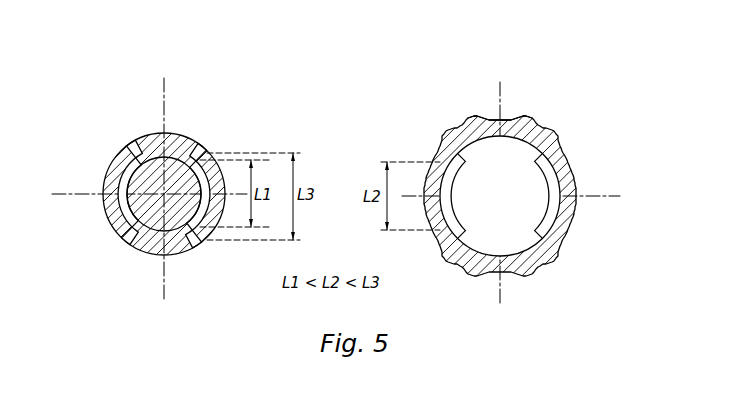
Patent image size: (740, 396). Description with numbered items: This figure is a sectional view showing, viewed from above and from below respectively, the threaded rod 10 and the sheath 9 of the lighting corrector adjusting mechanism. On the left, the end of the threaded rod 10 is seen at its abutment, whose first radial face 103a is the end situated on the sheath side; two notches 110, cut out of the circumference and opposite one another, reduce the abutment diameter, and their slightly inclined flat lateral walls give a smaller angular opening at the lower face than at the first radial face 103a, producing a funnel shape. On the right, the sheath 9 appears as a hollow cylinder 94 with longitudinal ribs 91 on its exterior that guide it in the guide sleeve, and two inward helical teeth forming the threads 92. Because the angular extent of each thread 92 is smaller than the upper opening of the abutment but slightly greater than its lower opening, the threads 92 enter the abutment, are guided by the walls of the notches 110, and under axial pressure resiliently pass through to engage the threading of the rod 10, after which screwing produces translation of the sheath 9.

The threaded rod 10 is at (171, 190).
The notches 110 is at (120, 210).
The first radial face 103a is at (171, 209).
The sheath 9 is at (486, 190).
The longitudinal ribs 91 is at (553, 130).
The threads 92 is at (452, 203).
The hollow cylinder 94 is at (514, 121).